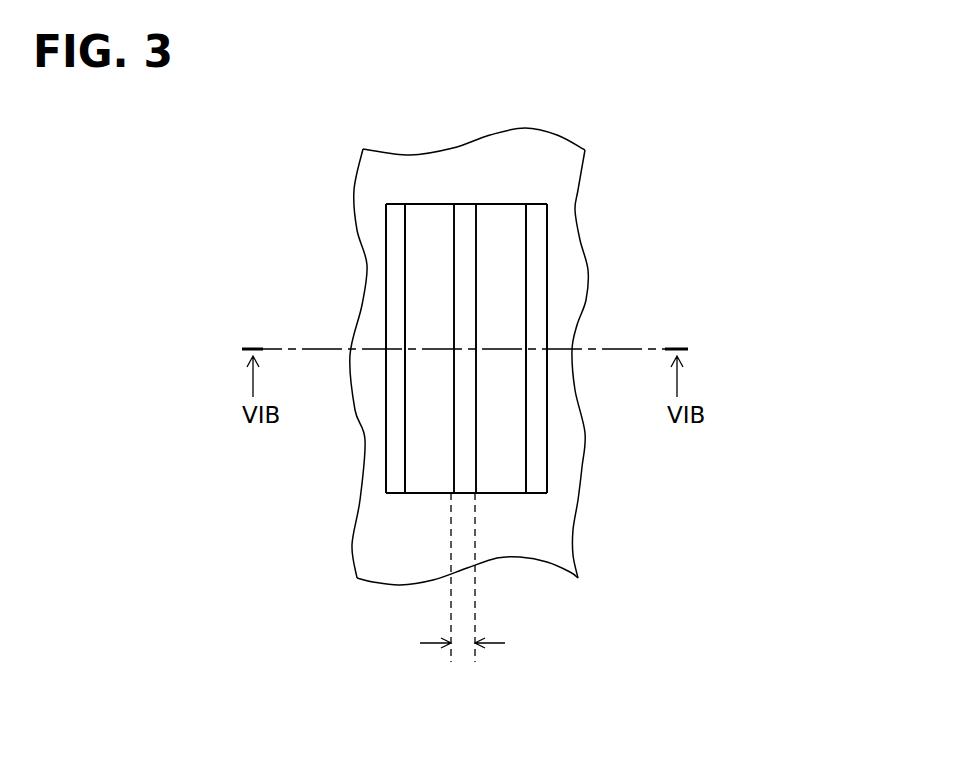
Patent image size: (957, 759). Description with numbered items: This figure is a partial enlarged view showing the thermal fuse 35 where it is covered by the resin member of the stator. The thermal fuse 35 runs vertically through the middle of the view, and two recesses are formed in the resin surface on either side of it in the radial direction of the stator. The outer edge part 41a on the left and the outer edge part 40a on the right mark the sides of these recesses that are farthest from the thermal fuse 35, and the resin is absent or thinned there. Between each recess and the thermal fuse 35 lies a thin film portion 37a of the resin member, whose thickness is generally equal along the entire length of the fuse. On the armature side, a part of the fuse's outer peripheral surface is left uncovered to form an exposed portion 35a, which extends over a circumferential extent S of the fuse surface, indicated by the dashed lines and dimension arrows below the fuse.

The thermal fuse 35 is at (464, 452).
The exposed portion 35a is at (463, 477).
The thin film portion 37a is at (420, 383).
The outer edge part 40a is at (535, 315).
The outer edge part 41a is at (393, 313).
The circumferential extent S is at (463, 643).